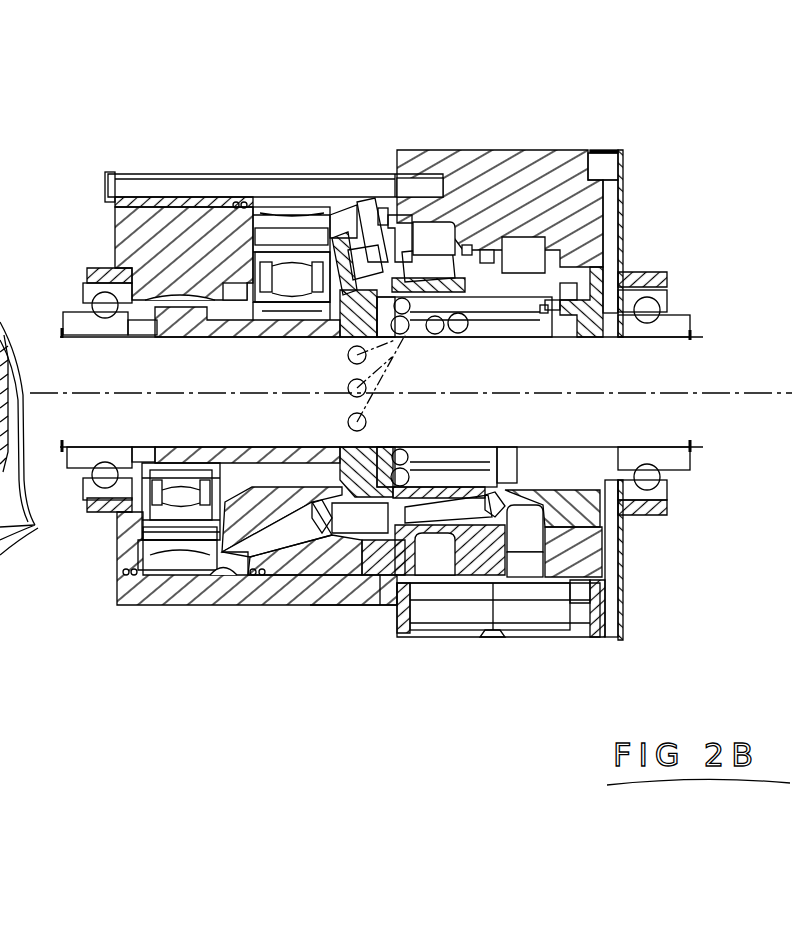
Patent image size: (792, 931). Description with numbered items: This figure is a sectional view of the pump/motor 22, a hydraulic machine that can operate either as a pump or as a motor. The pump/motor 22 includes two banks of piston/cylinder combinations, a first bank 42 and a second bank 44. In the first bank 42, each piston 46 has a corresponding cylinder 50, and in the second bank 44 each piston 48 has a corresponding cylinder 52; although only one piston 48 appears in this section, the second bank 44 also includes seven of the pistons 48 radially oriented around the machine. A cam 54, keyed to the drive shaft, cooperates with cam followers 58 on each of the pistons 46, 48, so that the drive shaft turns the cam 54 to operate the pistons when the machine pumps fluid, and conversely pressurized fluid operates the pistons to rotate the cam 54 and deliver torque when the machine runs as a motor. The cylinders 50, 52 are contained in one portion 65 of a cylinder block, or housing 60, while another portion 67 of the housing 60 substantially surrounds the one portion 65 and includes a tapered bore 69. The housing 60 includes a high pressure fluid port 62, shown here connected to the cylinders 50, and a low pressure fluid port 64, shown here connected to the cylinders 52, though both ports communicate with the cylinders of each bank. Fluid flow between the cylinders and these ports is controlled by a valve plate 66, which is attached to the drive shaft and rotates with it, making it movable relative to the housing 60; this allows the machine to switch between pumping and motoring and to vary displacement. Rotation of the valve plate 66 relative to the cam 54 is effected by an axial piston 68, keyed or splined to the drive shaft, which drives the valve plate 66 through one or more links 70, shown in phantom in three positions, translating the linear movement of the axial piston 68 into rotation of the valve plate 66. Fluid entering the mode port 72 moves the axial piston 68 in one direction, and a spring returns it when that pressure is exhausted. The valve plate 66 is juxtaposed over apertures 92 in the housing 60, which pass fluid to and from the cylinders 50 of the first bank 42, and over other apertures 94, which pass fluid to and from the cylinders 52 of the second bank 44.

The pump/motor 22 is at (619, 33).
The first bank 42 is at (107, 672).
The second bank 44 is at (322, 211).
The piston 46 is at (193, 683).
The piston 48 is at (300, 210).
The cylinder 50 is at (197, 560).
The cylinder 52 is at (293, 215).
The cam 54 is at (183, 343).
The cam follower 58 is at (293, 305).
The housing 60 is at (467, 140).
The high pressure fluid port 62 is at (570, 640).
The low pressure fluid port 64 is at (465, 645).
The one portion 65 is at (115, 218).
The valve plate 66 is at (370, 443).
The another portion 67 is at (110, 598).
The axial piston 68 is at (487, 343).
The tapered bore 69 is at (215, 565).
The link 70 is at (407, 337).
The mode port 72 is at (610, 147).
The aperture 92 is at (375, 615).
The aperture 94 is at (368, 203).